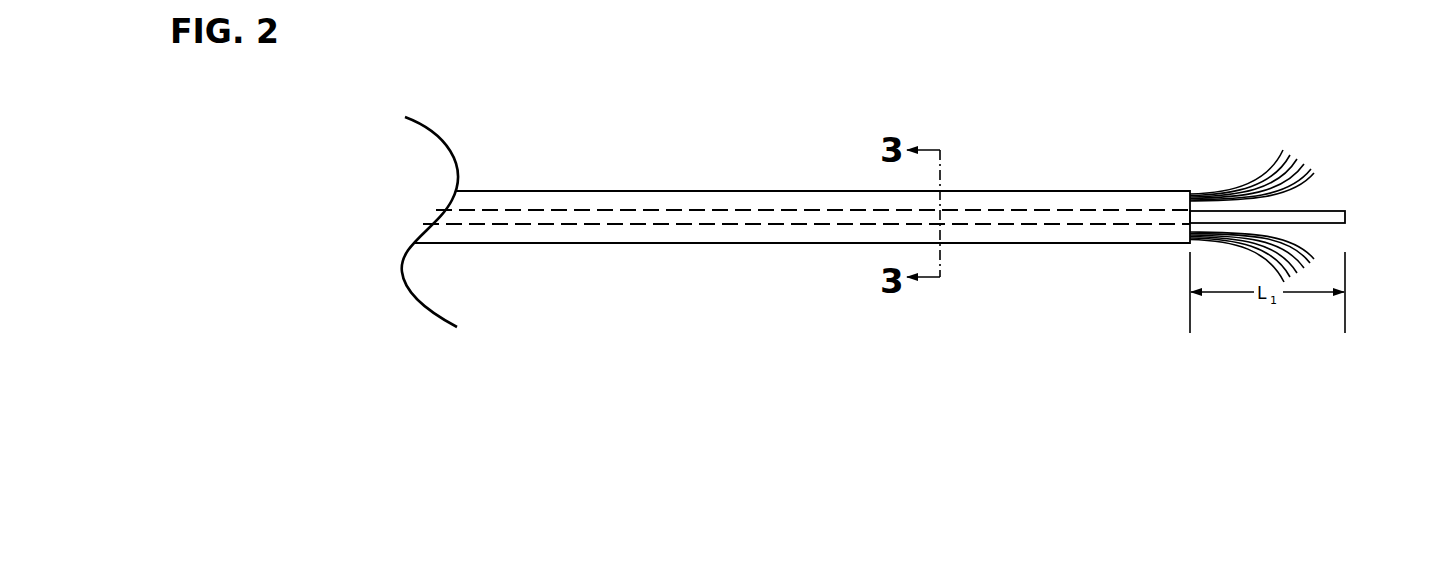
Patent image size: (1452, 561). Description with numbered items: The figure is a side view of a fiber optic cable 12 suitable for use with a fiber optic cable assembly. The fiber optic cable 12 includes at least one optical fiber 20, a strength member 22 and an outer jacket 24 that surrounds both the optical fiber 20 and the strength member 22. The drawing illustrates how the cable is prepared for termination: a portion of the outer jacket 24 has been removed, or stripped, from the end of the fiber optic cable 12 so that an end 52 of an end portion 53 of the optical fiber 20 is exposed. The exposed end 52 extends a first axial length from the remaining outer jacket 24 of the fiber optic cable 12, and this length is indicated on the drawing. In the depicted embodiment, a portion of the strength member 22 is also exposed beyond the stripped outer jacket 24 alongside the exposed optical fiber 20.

The fiber optic cable 12 is at (570, 142).
The optical fiber 20 is at (1013, 210).
The strength member 22 is at (1230, 192).
The outer jacket 24 is at (678, 243).
The end 52 is at (1345, 217).
The end portion 53 is at (1308, 140).